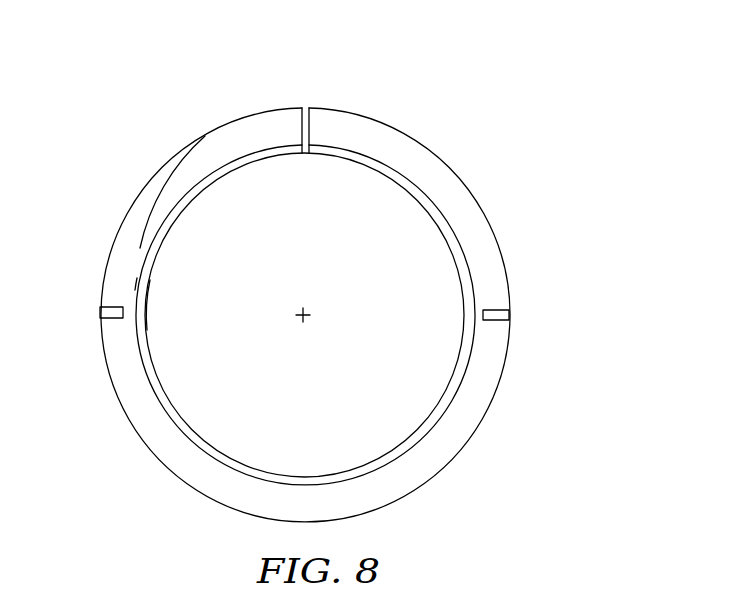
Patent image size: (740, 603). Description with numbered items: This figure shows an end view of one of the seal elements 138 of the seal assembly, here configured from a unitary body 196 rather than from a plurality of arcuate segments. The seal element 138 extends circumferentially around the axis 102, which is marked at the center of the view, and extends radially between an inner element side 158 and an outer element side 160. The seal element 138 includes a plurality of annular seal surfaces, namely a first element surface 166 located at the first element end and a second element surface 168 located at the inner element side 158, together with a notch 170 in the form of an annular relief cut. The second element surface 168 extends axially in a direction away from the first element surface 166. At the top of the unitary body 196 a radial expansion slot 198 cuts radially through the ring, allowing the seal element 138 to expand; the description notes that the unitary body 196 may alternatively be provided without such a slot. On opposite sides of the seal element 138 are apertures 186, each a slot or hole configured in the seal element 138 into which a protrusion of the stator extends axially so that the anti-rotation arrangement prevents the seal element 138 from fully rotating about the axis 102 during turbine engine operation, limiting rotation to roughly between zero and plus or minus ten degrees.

The seal element 138 is at (563, 225).
The outer element side 160 is at (455, 172).
The unitary body 196 is at (165, 163).
The first element surface 166 is at (123, 270).
The radial expansion slot 198 is at (303, 107).
The aperture 186 is at (100, 311).
The notch 170 is at (214, 185).
The inner element side 158 is at (440, 233).
The second element surface 168 is at (147, 298).
The axis 102 is at (307, 318).